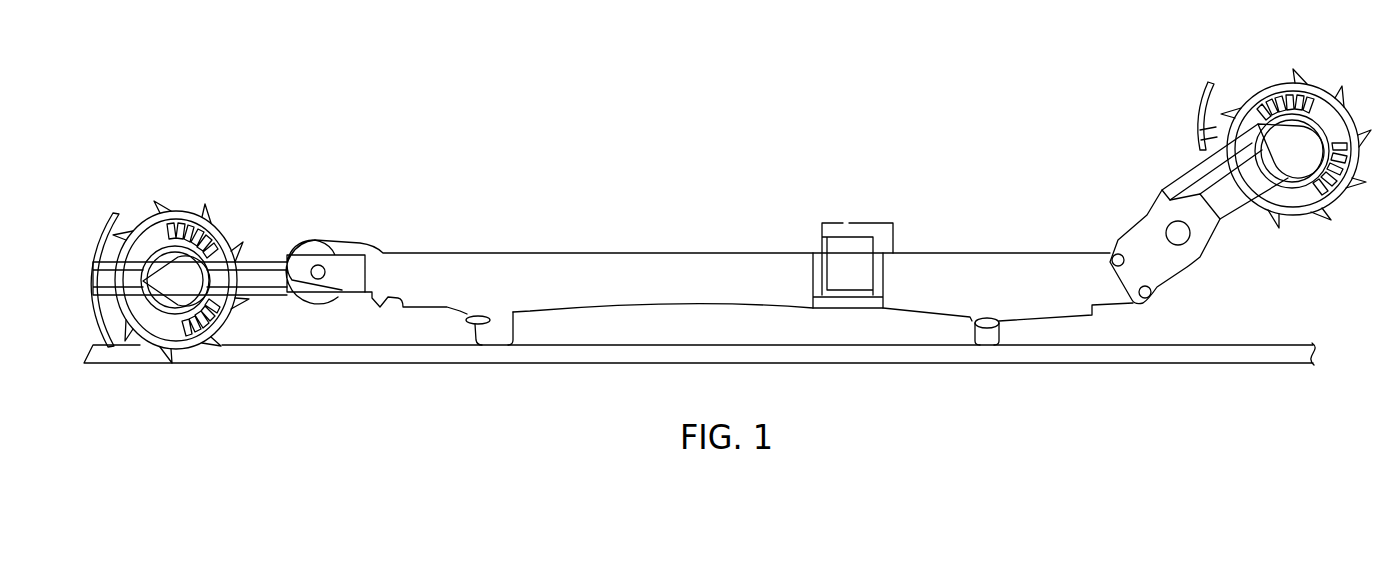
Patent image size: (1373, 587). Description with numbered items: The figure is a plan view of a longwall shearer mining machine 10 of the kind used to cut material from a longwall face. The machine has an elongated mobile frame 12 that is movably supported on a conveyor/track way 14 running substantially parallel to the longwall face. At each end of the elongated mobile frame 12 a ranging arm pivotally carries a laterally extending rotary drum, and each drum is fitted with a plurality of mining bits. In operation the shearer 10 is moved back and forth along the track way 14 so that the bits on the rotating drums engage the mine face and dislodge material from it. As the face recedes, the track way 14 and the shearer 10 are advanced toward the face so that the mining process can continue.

The longwall shearer mining machine 10 is at (530, 253).
The elongated mobile frame 12 is at (645, 266).
The conveyor/track way 14 is at (572, 356).